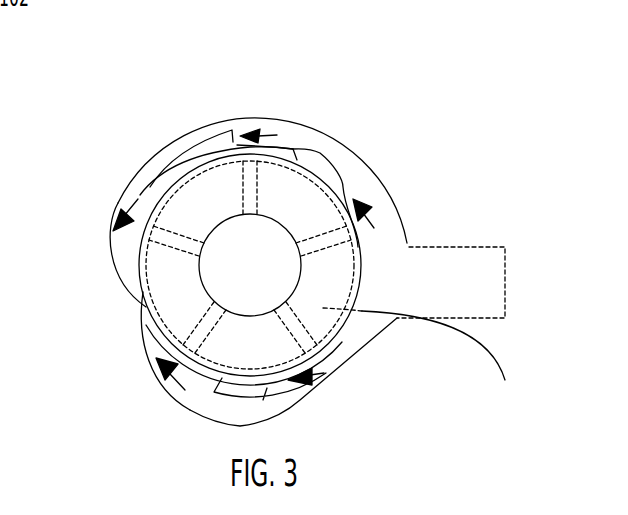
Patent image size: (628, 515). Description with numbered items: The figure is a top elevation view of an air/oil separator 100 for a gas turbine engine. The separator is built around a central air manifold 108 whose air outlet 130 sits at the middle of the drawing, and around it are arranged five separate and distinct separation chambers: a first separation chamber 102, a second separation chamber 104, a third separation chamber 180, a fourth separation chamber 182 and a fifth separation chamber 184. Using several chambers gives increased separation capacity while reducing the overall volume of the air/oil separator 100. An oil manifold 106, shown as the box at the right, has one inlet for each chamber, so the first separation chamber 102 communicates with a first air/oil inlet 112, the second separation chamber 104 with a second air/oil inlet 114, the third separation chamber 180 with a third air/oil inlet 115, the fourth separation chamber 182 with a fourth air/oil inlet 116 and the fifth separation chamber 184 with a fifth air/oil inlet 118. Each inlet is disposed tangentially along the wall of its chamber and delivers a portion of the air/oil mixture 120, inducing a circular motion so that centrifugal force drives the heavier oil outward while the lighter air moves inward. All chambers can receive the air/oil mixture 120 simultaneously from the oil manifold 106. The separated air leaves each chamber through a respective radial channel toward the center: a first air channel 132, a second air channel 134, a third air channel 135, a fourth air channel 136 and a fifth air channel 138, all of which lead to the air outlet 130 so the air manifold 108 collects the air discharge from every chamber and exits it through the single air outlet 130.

The air/oil separator 100 is at (444, 99).
The first separation chamber 102 is at (360, 250).
The second separation chamber 104 is at (198, 160).
The oil manifold 106 is at (460, 247).
The air manifold 108 is at (420, 363).
The first air/oil inlet 112 is at (380, 228).
The second air/oil inlet 114 is at (238, 127).
The third air/oil inlet 115 is at (130, 203).
The fourth air/oil inlet 116 is at (181, 393).
The fifth air/oil inlet 118 is at (324, 380).
The air/oil mixture 120 is at (264, 128).
The air outlet 130 is at (261, 280).
The first air channel 132 is at (310, 258).
The second air channel 134 is at (266, 190).
The third air channel 135 is at (177, 238).
The fourth air channel 136 is at (197, 317).
The fifth air channel 138 is at (282, 356).
The third separation chamber 180 is at (130, 280).
The fourth separation chamber 182 is at (140, 343).
The fifth separation chamber 184 is at (283, 413).